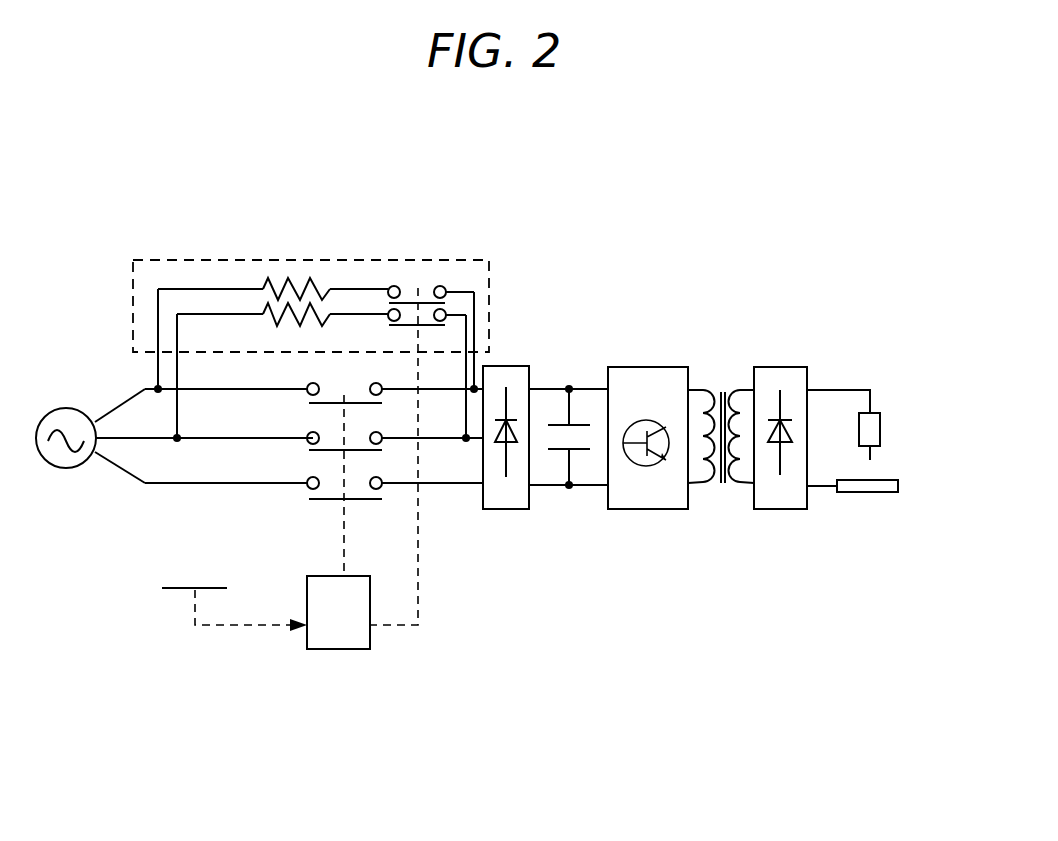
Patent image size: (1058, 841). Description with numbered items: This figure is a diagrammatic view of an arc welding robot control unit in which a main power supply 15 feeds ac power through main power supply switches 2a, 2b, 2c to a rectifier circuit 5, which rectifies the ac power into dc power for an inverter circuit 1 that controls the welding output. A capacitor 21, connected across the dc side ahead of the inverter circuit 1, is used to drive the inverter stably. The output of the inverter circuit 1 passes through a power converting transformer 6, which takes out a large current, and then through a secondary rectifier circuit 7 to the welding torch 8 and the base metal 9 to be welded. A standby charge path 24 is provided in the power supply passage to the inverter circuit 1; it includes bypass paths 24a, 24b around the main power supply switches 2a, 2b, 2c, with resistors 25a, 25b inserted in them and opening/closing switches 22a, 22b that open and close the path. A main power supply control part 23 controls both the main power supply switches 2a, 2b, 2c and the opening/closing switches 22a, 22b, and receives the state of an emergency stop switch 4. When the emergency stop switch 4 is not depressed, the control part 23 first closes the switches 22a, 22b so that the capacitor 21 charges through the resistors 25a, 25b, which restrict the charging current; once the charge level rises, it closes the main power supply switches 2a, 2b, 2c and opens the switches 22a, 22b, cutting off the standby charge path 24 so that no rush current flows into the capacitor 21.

The inverter circuit 1 is at (660, 378).
The main power supply switch 2a is at (372, 499).
The main power supply switch 2b is at (313, 450).
The main power supply switch 2c is at (372, 403).
The emergency stop switch 4 is at (180, 600).
The rectifier circuit 5 is at (491, 378).
The power converting transformer 6 is at (730, 500).
The secondary rectifier circuit 7 is at (775, 380).
The welding torch 8 is at (873, 422).
The base metal 9 is at (890, 490).
The main power supply 15 is at (61, 408).
The capacitor 21 is at (578, 420).
The opening/closing switch 22a is at (444, 288).
The opening/closing switch 22b is at (432, 323).
The main power supply control part 23 is at (350, 637).
The standby charge path 24 is at (147, 261).
The bypass path 24a is at (344, 289).
The bypass path 24b is at (370, 314).
The resistor 25a is at (307, 285).
The resistor 25b is at (275, 319).